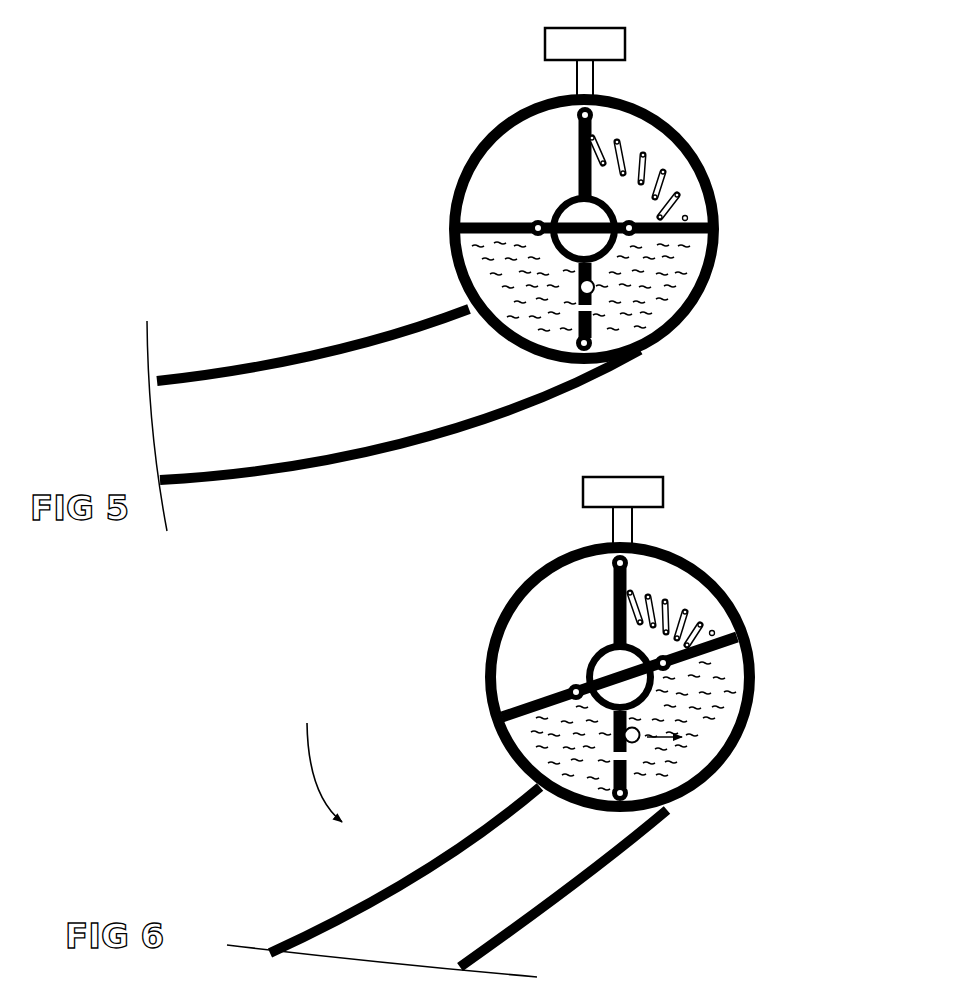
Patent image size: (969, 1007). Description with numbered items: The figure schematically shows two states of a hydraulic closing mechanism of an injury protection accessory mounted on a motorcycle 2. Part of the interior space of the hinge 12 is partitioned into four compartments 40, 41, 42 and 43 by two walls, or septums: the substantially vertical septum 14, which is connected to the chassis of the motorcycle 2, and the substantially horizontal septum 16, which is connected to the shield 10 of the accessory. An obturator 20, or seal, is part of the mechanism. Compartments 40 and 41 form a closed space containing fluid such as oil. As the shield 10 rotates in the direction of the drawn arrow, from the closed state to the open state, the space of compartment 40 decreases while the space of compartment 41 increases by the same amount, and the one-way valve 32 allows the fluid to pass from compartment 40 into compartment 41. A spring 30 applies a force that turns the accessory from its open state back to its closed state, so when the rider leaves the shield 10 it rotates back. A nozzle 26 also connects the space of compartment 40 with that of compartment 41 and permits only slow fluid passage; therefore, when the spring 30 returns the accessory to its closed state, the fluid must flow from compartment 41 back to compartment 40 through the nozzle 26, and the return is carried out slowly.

In FIG. 5, the motorcycle 2 is at (577, 57).
In FIG. 6, the motorcycle 2 is at (615, 505).
In FIG. 5, the shield 10 is at (336, 415).
In FIG. 6, the shield 10 is at (481, 907).
In FIG. 5, the hinge 12 is at (460, 192).
In FIG. 6, the hinge 12 is at (484, 650).
In FIG. 5, the vertical septum 14 is at (590, 320).
In FIG. 5, the horizontal septum 16 is at (505, 222).
In FIG. 6, the horizontal septum 16 is at (619, 677).
In FIG. 5, the obturator 20 is at (576, 112).
In FIG. 6, the obturator 20 is at (572, 683).
In FIG. 6, the nozzle 26 is at (645, 757).
In FIG. 5, the spring 30 is at (665, 178).
In FIG. 6, the one-way valve 32 is at (605, 737).
In FIG. 5, the compartment 40 is at (500, 271).
In FIG. 6, the compartment 40 is at (530, 736).
In FIG. 5, the compartment 41 is at (675, 280).
In FIG. 6, the compartment 41 is at (730, 702).
In FIG. 5, the compartment 42 is at (658, 152).
In FIG. 6, the compartment 42 is at (688, 598).
In FIG. 5, the compartment 43 is at (513, 173).
In FIG. 6, the compartment 43 is at (558, 603).